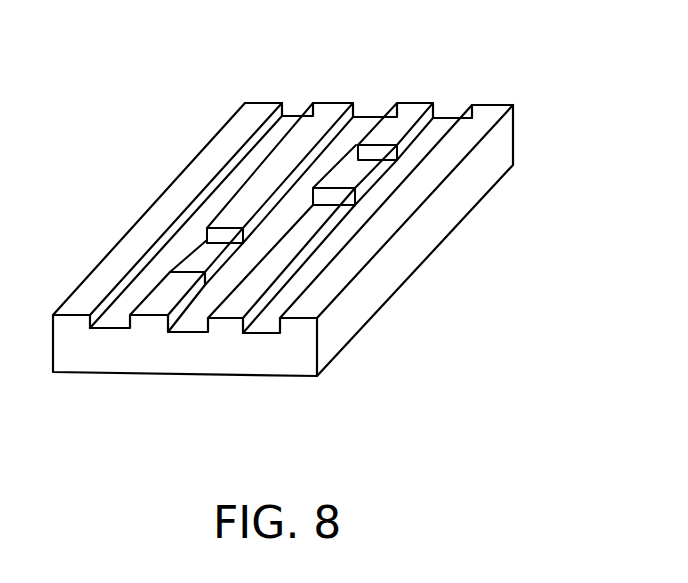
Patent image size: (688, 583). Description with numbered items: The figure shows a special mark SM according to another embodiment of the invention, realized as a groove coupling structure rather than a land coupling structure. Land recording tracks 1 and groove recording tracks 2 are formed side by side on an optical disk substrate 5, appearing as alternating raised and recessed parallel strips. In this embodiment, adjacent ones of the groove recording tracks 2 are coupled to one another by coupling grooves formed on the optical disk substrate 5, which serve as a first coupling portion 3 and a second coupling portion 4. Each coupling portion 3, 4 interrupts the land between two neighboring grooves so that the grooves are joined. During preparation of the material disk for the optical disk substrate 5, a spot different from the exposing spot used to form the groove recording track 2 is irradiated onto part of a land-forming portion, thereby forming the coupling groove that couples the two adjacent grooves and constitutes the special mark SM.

The land recording track 1 is at (148, 322).
The groove recording track 2 is at (188, 332).
The first coupling portion 3 is at (215, 253).
The second coupling portion 4 is at (360, 175).
The optical disk substrate 5 is at (262, 357).
The special mark SM is at (439, 92).